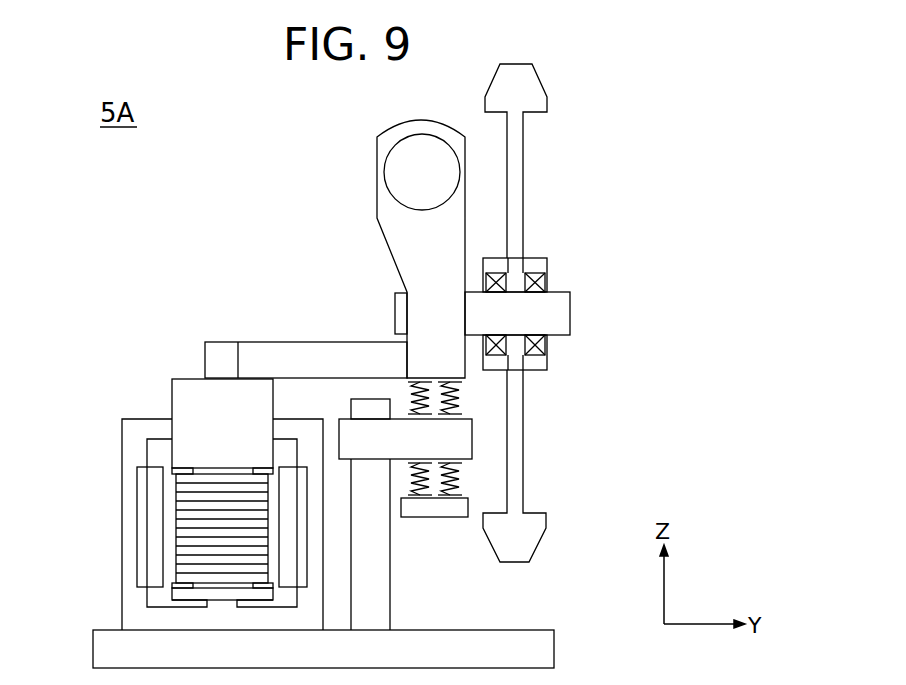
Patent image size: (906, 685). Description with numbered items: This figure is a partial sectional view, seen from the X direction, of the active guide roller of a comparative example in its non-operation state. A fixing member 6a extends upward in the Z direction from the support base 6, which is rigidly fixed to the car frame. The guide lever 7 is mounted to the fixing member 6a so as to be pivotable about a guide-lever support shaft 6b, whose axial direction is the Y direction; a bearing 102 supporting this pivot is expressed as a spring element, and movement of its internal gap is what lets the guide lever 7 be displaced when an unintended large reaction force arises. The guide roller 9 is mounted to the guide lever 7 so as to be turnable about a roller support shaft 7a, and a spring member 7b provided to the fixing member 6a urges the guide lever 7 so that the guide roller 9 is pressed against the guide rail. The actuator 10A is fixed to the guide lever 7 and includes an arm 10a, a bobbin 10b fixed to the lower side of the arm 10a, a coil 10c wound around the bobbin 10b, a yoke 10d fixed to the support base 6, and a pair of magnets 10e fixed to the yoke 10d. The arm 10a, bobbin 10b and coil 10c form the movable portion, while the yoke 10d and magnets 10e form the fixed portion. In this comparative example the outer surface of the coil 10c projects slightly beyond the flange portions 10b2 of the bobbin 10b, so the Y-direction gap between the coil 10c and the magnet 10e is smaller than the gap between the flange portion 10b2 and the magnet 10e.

The support base 6 is at (540, 652).
The fixing member 6a is at (372, 590).
The guide-lever support shaft 6b is at (460, 446).
The guide lever 7 is at (407, 240).
The roller support shaft 7a is at (563, 300).
The spring member 7b is at (412, 170).
The guide roller 9 is at (523, 170).
The actuator 10A is at (116, 414).
The arm 10a is at (296, 352).
The bobbin 10b is at (194, 395).
The flange portions 10b2 is at (172, 592).
The coil 10c is at (190, 553).
The yoke 10d is at (135, 455).
The magnets 10e is at (148, 508).
The bearing 102 is at (455, 405).